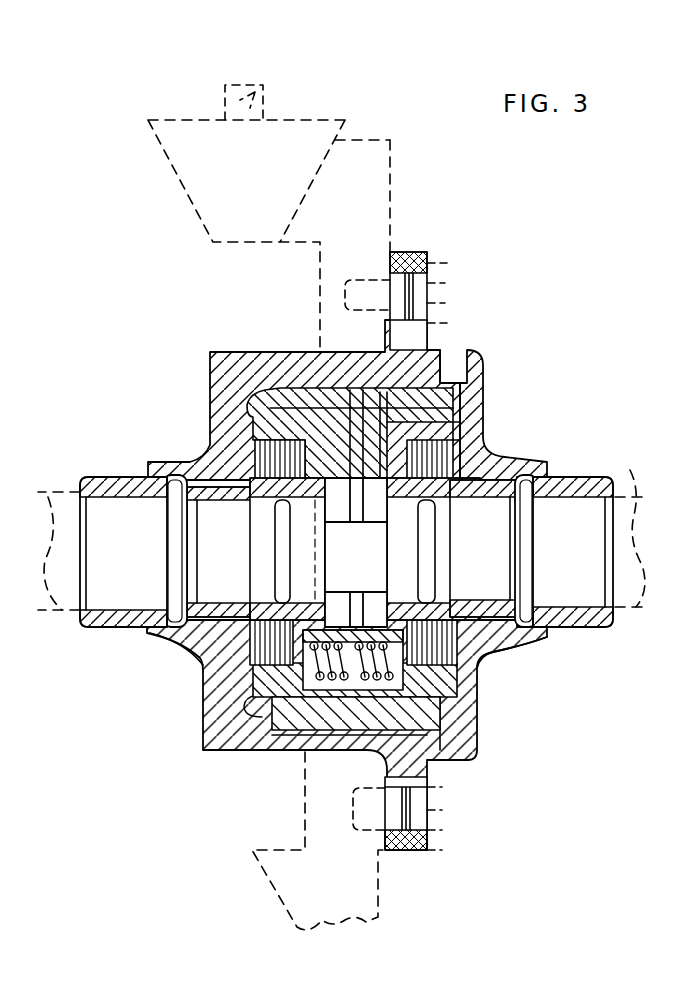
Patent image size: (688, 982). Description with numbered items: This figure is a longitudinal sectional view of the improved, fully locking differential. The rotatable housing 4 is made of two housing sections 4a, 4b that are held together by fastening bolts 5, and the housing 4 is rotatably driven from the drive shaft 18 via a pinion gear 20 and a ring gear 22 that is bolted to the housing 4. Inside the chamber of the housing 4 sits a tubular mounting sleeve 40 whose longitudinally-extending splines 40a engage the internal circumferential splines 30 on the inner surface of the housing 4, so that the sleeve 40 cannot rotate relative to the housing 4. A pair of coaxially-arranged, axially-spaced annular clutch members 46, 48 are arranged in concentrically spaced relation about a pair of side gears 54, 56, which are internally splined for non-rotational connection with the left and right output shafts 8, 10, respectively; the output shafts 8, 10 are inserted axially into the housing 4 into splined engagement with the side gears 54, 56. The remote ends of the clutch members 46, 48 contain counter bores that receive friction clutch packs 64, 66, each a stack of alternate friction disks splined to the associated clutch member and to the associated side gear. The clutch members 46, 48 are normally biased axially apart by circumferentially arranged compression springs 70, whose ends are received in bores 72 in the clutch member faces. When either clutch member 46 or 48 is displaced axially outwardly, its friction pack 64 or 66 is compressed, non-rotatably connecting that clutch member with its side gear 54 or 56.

The housing 4 is at (220, 348).
The housing section 4a is at (208, 400).
The housing section 4b is at (480, 377).
The fastening bolts 5 is at (448, 283).
The left output shaft 8 is at (70, 617).
The right output shaft 10 is at (637, 477).
The drive shaft 18 is at (268, 95).
The pinion gear 20 is at (195, 193).
The ring gear 22 is at (395, 163).
The internal circumferential splines 30 is at (283, 753).
The tubular mounting sleeve 40 is at (440, 383).
The longitudinally-extending splines 40a is at (440, 710).
The annular clutch member 46 is at (287, 413).
The annular clutch member 48 is at (440, 428).
The side gear 54 is at (205, 487).
The side gear 56 is at (520, 492).
The friction clutch pack 64 is at (203, 663).
The friction clutch pack 66 is at (493, 657).
The compression springs 70 is at (373, 697).
The bores 72 is at (333, 687).